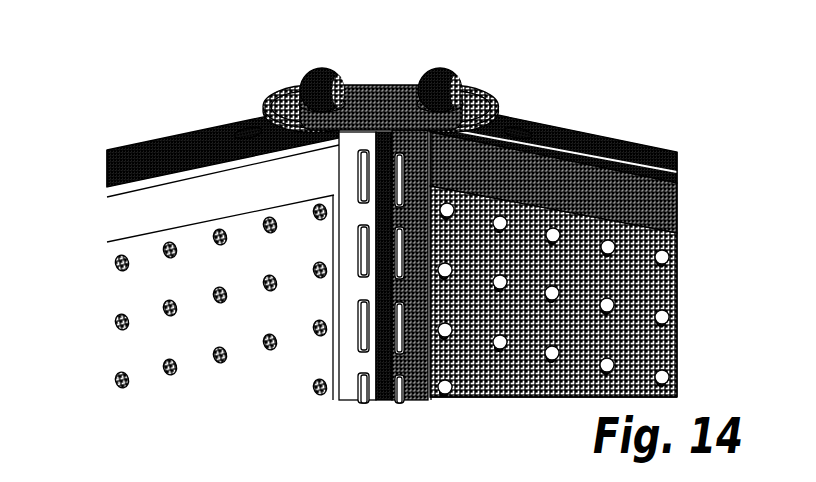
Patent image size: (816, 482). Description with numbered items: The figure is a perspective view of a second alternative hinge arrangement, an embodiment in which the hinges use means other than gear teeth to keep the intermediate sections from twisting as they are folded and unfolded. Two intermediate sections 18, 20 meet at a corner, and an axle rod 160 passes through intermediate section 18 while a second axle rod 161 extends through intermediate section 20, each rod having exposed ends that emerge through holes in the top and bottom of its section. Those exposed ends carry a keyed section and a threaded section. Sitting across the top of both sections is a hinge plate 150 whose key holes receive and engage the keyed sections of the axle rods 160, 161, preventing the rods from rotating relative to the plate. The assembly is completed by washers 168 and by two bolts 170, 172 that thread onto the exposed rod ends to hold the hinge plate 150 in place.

The intermediate section 18 is at (208, 345).
The intermediate section 20 is at (557, 372).
The hinge plate 150 is at (380, 92).
The axle rod 160 is at (327, 72).
The axle rod 161 is at (443, 72).
The washer 168 is at (277, 95).
The bolt 170 is at (302, 87).
The bolt 172 is at (463, 93).